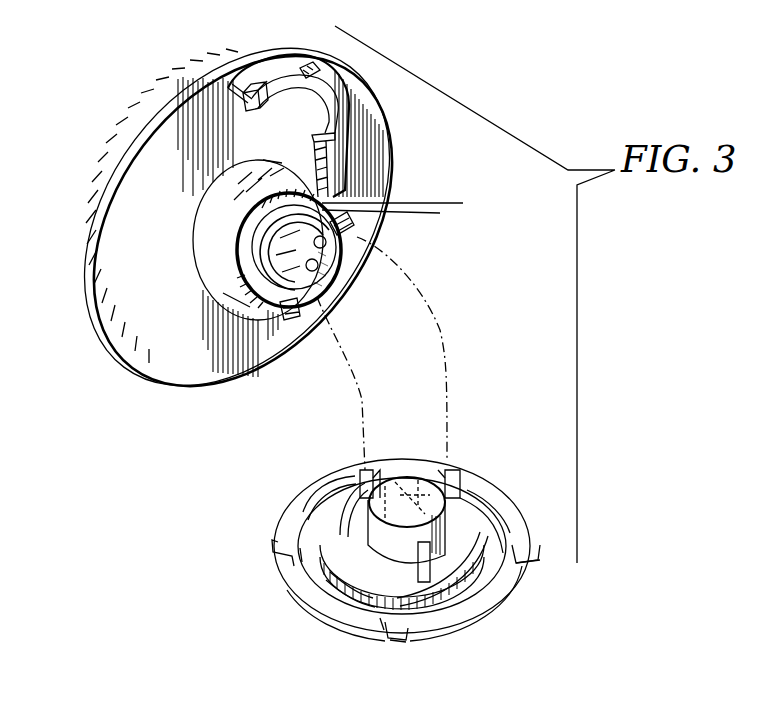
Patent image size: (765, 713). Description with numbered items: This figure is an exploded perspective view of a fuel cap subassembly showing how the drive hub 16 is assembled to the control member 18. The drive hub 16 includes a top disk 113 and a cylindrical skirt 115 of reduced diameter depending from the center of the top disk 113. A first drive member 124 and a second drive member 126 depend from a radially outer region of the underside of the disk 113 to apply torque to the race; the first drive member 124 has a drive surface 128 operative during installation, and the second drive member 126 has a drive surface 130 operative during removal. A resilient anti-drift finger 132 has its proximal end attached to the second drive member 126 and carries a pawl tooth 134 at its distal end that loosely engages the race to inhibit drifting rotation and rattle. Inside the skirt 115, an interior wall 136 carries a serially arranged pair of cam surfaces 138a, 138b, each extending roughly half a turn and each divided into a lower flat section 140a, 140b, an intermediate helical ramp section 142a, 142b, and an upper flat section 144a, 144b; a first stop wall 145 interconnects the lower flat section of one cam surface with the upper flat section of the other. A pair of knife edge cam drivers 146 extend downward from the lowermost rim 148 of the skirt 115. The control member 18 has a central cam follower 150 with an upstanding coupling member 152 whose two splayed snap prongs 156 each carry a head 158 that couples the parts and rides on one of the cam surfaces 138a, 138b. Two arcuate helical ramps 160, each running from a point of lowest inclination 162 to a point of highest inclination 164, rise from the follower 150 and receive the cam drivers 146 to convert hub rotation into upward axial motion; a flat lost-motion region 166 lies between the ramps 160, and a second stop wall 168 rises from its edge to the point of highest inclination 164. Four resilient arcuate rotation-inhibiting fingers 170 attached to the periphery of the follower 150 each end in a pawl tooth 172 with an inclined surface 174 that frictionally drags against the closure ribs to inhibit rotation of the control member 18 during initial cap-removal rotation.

The drive hub 16 is at (76, 266).
The top disk 113 is at (143, 358).
The cylindrical skirt 115 is at (222, 234).
The first drive member 124 is at (256, 90).
The second drive member 126 is at (340, 157).
The drive surface 128 is at (243, 96).
The drive surface 130 is at (350, 197).
The anti-drift finger 132 is at (322, 98).
The pawl tooth 134 is at (317, 70).
The interior wall 136 is at (302, 286).
The cam surface 138a is at (224, 236).
The cam surface 138b is at (322, 315).
The lower flat section 140a is at (290, 186).
The lower flat section 140b is at (330, 335).
The intermediate helical ramp section 142a is at (292, 267).
The intermediate helical ramp section 142b is at (325, 297).
The upper flat section 144a is at (288, 298).
The upper flat section 144b is at (330, 268).
The first stop wall 145 is at (410, 198).
The knife edge cam driver 146 is at (372, 213).
The lowermost rim 148 is at (257, 232).
The control member 18 is at (318, 612).
The cam follower 150 is at (300, 580).
The coupling member 152 is at (470, 515).
The snap prong 156 is at (372, 484).
The head 158 is at (345, 508).
The arcuate helical ramp 160 is at (340, 478).
The point of lowest inclination 162 is at (305, 492).
The point of highest inclination 164 is at (416, 470).
The lost-motion region 166 is at (372, 622).
The second stop wall 168 is at (450, 453).
The rotation-inhibiting finger 170 is at (528, 523).
The pawl tooth 172 is at (266, 545).
The inclined surface 174 is at (540, 558).